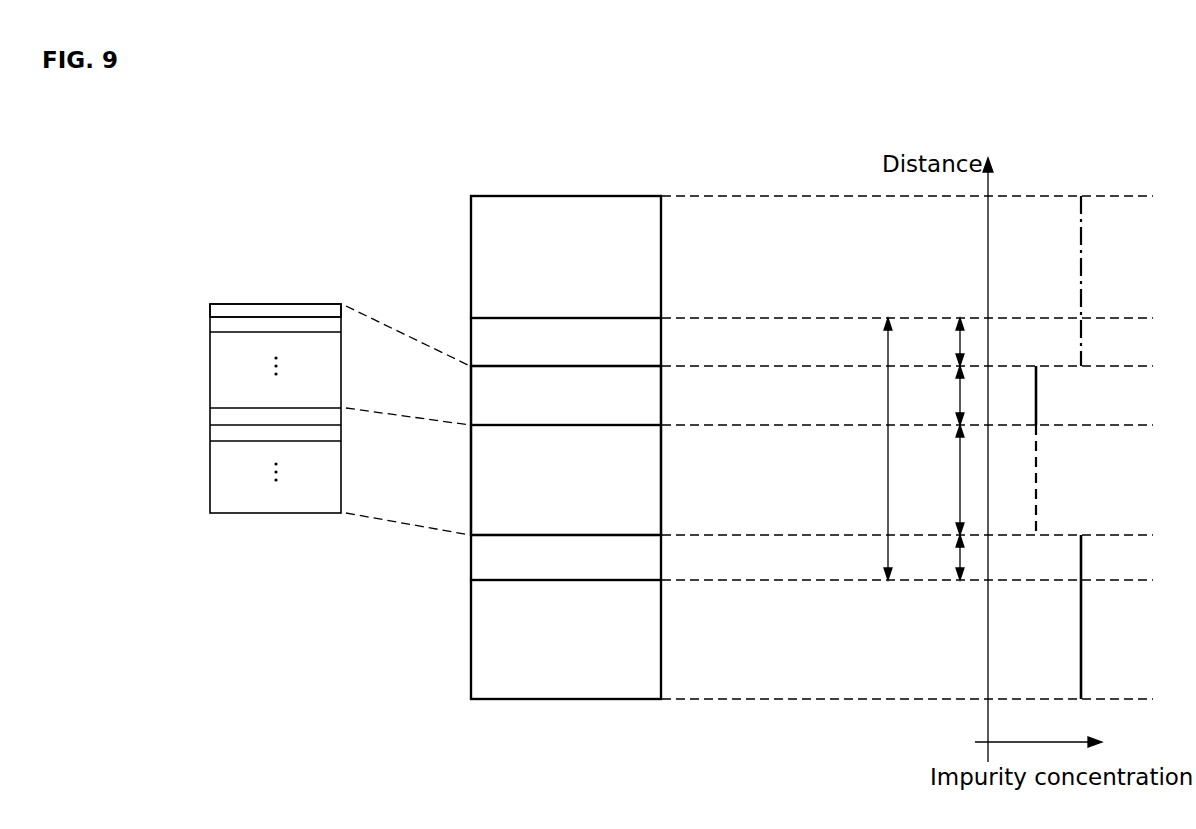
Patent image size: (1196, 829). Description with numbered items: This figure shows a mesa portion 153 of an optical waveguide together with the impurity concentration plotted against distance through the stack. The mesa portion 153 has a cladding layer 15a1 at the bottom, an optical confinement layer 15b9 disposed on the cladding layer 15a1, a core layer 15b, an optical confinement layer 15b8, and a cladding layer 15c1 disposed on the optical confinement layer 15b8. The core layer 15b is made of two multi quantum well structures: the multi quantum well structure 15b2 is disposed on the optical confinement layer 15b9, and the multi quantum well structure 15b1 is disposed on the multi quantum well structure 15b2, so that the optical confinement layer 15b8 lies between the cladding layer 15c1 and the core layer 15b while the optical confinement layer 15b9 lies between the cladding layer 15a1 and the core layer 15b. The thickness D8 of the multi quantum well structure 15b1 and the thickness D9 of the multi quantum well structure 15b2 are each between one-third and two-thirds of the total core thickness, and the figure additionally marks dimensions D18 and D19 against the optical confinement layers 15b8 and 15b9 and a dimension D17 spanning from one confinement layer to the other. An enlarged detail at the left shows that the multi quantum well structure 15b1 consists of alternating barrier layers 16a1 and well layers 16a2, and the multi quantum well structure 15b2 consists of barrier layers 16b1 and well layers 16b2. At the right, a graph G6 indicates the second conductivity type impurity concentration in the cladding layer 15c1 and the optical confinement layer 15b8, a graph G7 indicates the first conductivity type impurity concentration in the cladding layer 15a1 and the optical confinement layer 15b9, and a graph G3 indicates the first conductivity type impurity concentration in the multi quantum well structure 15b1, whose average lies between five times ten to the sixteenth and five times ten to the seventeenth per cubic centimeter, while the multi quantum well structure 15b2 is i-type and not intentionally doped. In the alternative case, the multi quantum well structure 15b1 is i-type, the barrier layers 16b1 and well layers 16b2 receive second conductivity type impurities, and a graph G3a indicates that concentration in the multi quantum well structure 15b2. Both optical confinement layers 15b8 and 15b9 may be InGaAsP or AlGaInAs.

The mesa portion 153 is at (541, 184).
The cladding layer 15c1 is at (480, 276).
The optical confinement layer 15b8 is at (640, 341).
The multi quantum well (MQW) structure 15b1 is at (640, 401).
The multi quantum well (MQW) structure 15b2 is at (640, 481).
The core layer 15b is at (742, 399).
The optical confinement layer 15b9 is at (640, 556).
The cladding layer 15a1 is at (480, 635).
The barrier layers 16a1 is at (212, 311).
The well layers 16a2 is at (212, 327).
The barrier layers 16b1 is at (212, 415).
The well layers 16b2 is at (212, 432).
The total thickness D17 is at (865, 449).
The thickness of layer 15b8 D18 is at (934, 342).
The thickness D8 is at (942, 395).
The thickness D9 is at (942, 480).
The thickness of layer 15b9 D19 is at (934, 557).
The graph G6 is at (1083, 272).
The graph G3 is at (1038, 390).
The graph G3a is at (1038, 485).
The graph G7 is at (1083, 620).